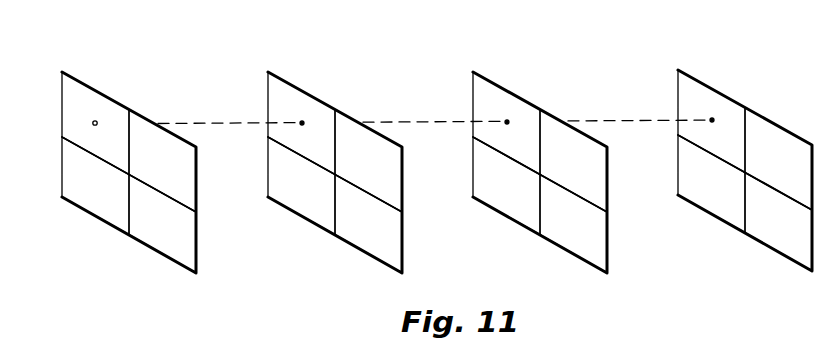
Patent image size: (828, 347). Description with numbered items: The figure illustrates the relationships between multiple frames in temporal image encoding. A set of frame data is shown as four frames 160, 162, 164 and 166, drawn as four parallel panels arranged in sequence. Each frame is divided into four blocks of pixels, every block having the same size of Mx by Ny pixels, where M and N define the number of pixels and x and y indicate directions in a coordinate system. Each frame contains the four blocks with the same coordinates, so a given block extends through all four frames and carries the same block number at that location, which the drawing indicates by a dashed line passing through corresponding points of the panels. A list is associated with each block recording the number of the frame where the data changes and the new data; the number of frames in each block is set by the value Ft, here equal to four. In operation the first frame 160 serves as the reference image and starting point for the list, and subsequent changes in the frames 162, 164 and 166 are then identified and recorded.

The first frame 160 is at (111, 166).
The frame 162 is at (307, 183).
The frame 164 is at (512, 183).
The frame 166 is at (717, 181).